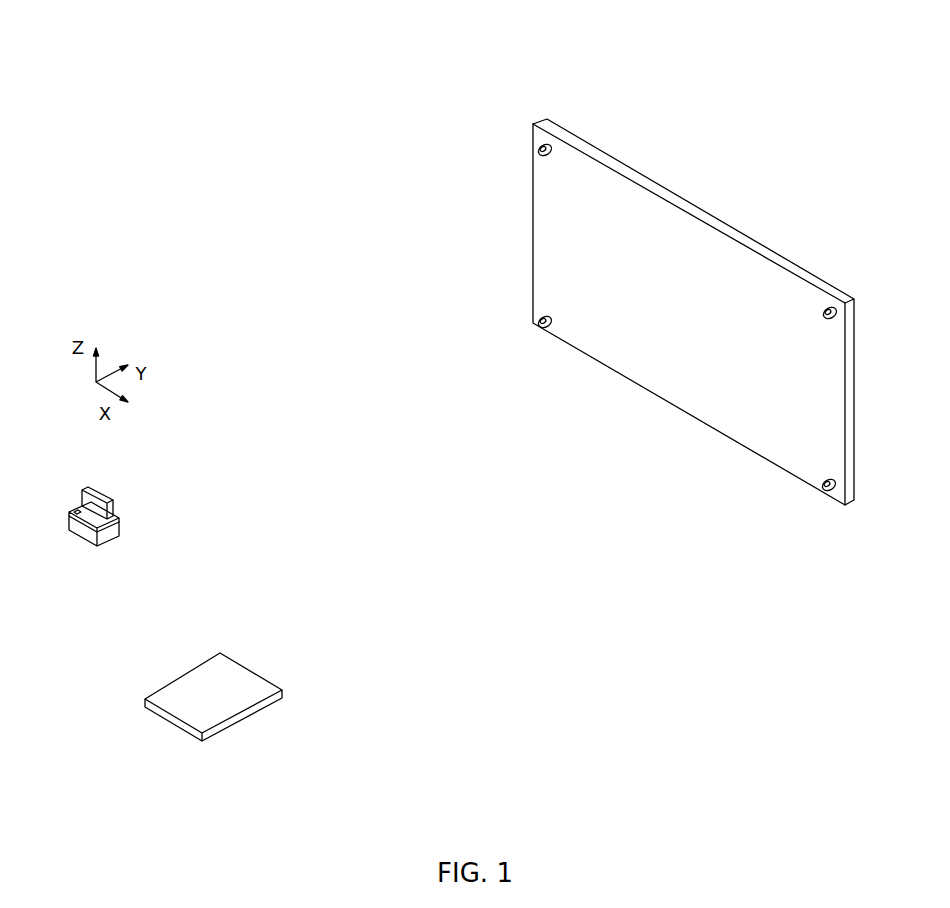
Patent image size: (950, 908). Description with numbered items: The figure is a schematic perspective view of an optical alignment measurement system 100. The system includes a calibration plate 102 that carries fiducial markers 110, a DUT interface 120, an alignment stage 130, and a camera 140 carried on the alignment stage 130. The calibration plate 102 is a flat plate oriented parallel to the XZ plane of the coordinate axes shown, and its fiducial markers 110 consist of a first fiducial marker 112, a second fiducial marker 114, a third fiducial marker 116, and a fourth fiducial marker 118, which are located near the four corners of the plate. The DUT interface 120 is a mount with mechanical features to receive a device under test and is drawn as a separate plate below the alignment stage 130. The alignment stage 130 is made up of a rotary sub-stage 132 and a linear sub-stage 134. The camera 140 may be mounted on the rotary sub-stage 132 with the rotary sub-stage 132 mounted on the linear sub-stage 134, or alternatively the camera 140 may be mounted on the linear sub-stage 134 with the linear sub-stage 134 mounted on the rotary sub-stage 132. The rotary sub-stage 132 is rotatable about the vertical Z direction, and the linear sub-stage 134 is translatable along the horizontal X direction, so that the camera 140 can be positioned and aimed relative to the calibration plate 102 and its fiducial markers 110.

The optical alignment measurement system 100 is at (180, 102).
The calibration plate 102 is at (547, 212).
The fiducial markers 110 is at (820, 455).
The first fiducial marker 112 is at (538, 154).
The second fiducial marker 114 is at (838, 487).
The third fiducial marker 116 is at (836, 312).
The fourth fiducial marker 118 is at (535, 323).
The DUT interface 120 is at (243, 715).
The alignment stage 130 is at (110, 504).
The rotary sub-stage 132 is at (78, 515).
The linear sub-stage 134 is at (82, 527).
The camera 140 is at (93, 502).